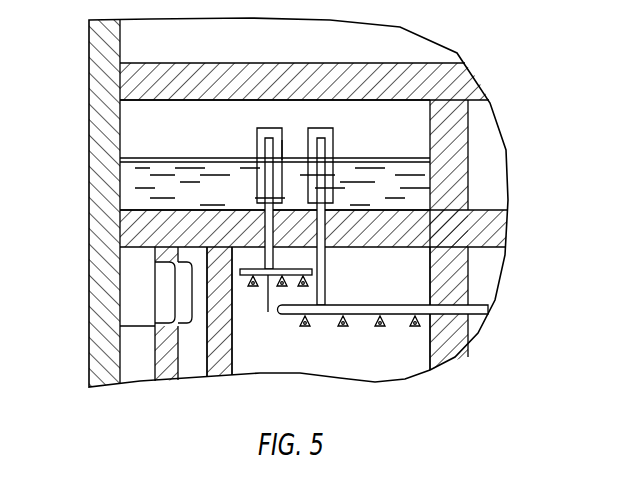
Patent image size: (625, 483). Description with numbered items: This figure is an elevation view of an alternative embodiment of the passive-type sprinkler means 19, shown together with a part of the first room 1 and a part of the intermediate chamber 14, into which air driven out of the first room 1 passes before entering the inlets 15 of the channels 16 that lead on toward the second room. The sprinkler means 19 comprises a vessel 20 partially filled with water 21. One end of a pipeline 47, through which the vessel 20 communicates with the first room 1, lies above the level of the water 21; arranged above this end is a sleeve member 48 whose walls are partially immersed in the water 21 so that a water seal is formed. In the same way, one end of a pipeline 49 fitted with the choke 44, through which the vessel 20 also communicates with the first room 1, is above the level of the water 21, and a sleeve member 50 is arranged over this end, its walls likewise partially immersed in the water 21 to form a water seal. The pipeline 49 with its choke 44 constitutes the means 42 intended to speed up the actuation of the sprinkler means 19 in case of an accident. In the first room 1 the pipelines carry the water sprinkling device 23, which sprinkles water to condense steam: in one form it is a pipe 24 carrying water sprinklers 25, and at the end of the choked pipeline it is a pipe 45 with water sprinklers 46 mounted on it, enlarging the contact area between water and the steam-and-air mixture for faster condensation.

The first room 1 is at (392, 260).
The intermediate chamber 14 is at (197, 362).
The inlets 15 is at (127, 323).
The channels 16 is at (143, 365).
The passive-type sprinkler means 19 is at (148, 124).
The vessel 20 is at (120, 200).
The water 21 is at (120, 172).
The water sprinkling device 23 is at (342, 297).
The pipe 24 is at (488, 312).
The water sprinklers 25 is at (346, 320).
The means for speeding up actuation 42 is at (250, 148).
The choke 44 is at (243, 213).
The pipe 45 is at (267, 313).
The water sprinklers 46 is at (253, 288).
The pipeline 47 is at (326, 268).
The sleeve member 48 is at (335, 150).
The pipeline 49 is at (268, 250).
The sleeve member 50 is at (281, 152).